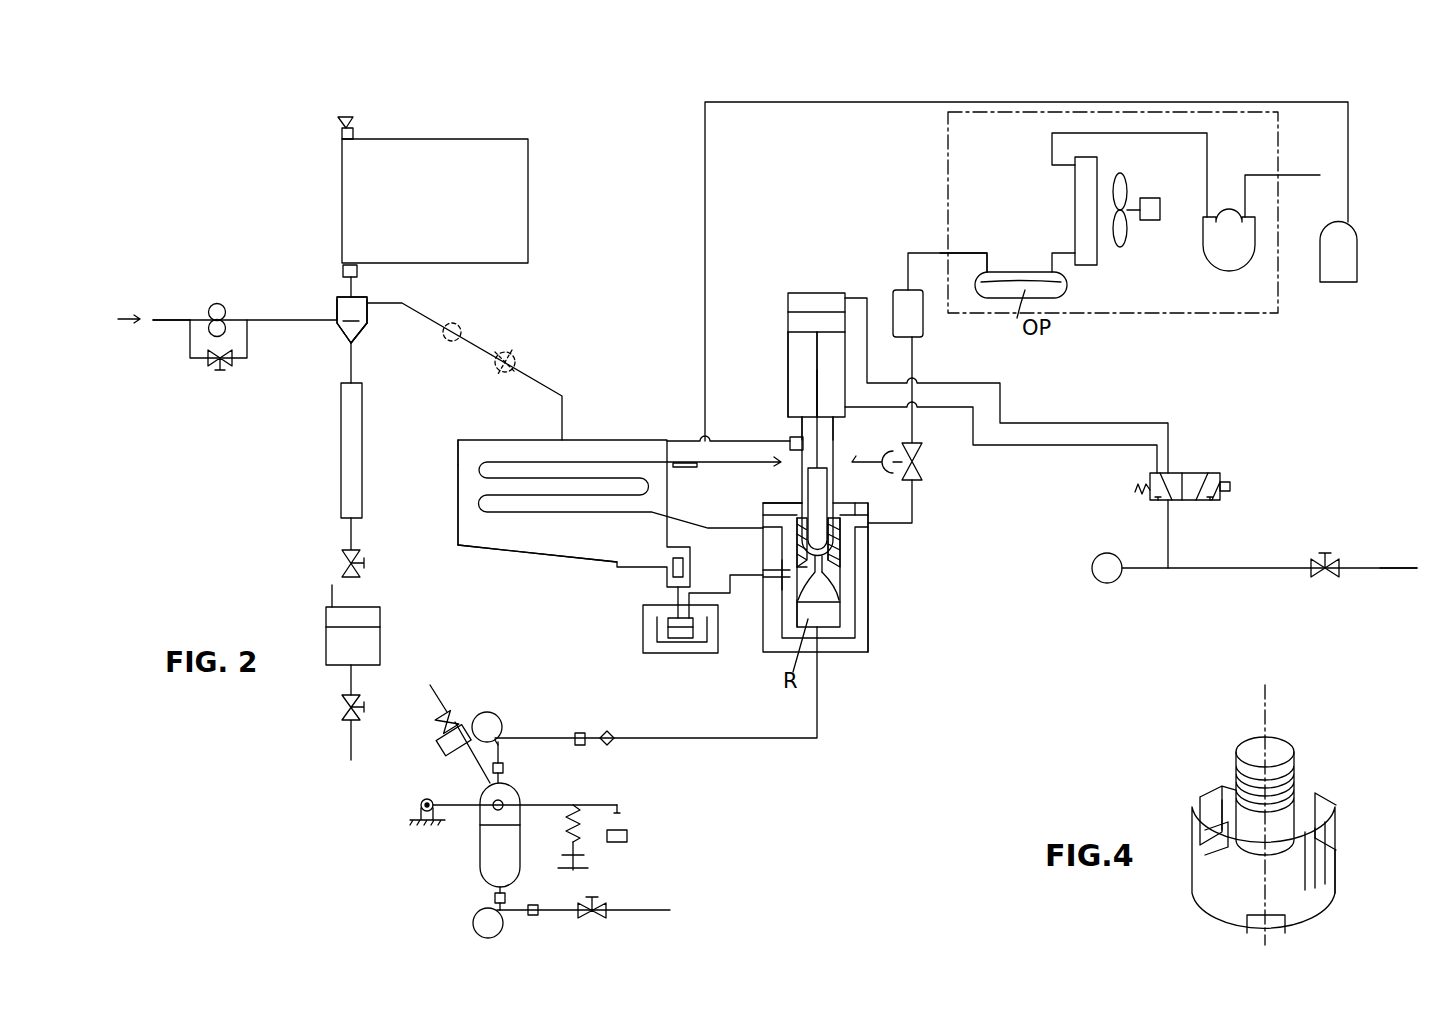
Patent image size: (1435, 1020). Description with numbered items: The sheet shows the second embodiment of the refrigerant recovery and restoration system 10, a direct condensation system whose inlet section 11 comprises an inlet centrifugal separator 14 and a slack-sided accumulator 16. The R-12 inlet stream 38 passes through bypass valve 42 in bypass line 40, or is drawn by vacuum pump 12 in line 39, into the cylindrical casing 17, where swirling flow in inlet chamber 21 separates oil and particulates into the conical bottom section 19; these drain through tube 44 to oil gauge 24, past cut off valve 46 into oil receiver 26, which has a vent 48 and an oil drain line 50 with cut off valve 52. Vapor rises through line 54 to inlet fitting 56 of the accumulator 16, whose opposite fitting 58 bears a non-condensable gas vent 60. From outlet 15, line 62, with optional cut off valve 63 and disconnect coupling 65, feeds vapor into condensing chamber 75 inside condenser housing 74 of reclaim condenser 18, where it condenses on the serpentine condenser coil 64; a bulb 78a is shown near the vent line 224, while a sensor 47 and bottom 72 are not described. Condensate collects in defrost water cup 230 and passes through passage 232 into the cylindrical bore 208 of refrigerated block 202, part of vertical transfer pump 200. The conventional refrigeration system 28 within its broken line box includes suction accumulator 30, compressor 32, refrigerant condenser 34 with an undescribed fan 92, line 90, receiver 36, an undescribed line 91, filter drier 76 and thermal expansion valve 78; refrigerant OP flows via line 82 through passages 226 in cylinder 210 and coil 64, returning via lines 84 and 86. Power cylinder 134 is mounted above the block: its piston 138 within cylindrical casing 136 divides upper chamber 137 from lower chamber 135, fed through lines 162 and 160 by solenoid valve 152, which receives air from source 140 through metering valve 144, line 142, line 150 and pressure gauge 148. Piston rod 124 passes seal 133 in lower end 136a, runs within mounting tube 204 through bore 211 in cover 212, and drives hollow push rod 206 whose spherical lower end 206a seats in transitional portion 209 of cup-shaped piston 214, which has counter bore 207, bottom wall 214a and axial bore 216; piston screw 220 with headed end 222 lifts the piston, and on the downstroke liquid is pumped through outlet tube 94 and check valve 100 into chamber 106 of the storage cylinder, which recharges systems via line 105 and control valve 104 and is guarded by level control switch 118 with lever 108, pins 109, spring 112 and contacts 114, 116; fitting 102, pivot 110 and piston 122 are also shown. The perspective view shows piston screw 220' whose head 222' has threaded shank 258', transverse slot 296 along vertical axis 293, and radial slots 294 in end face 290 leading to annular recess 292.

In FIG. 2, the refrigerant recovery and restoration system 10 is at (228, 280).
In FIG. 2, the inlet section 11 is at (387, 352).
In FIG. 2, the vacuum pump 12 is at (226, 311).
In FIG. 2, the inlet centrifugal separator 14 is at (376, 324).
In FIG. 2, the outlet 15 is at (367, 301).
In FIG. 2, the slack-sided accumulator 16 is at (452, 134).
In FIG. 2, the cylindrical casing 17 is at (337, 310).
In FIG. 2, the reclaim condenser 18 is at (599, 440).
In FIG. 2, the conical bottom section 19 is at (344, 338).
In FIG. 2, the inlet chamber 21 is at (353, 312).
In FIG. 2, the oil gauge 24 is at (341, 422).
In FIG. 2, the oil receiver 26 is at (326, 646).
In FIG. 2, the conventional refrigeration system 28 is at (1217, 316).
In FIG. 2, the suction accumulator 30 is at (1343, 282).
In FIG. 2, the compressor 32 is at (1225, 262).
In FIG. 2, the refrigerant condenser 34 is at (1075, 200).
In FIG. 2, the receiver 36 is at (1070, 285).
In FIG. 2, the refrigerant inlet stream 38 is at (120, 322).
In FIG. 2, the line 39 is at (166, 318).
In FIG. 2, the bypass line 40 is at (188, 356).
In FIG. 2, the bypass valve 42 is at (222, 368).
In FIG. 2, the line or tube 44 is at (351, 370).
In FIG. 2, the cut off valve 46 is at (359, 555).
In FIG. 2, the sensor 47 is at (424, 716).
In FIG. 2, the vent 48 is at (330, 593).
In FIG. 2, the oil drain line 50 is at (351, 688).
In FIG. 2, the cut off valve 52 is at (343, 708).
In FIG. 2, the line 54 is at (351, 286).
In FIG. 2, the inlet fitting 56 is at (343, 270).
In FIG. 2, the fitting 58 is at (357, 133).
In FIG. 2, the non-condensable gas vent 60 is at (353, 121).
In FIG. 2, the line 62 is at (426, 316).
In FIG. 2, the cut off valve 63 is at (514, 351).
In FIG. 2, the condenser coil 64 is at (527, 461).
In FIG. 2, the disconnect coupling 65 is at (459, 325).
In FIG. 2, the housing bottom 72 is at (535, 556).
In FIG. 2, the condenser housing 74 is at (457, 493).
In FIG. 2, the condensing chamber 75 is at (473, 452).
In FIG. 2, the filter drier 76 is at (897, 290).
In FIG. 2, the thermal expansion valve 78 is at (923, 462).
In FIG. 2, the temperature sensitive bulb 78a is at (684, 469).
In FIG. 2, the line 82 is at (913, 518).
In FIG. 2, the line 84 is at (704, 270).
In FIG. 2, the line 86 is at (1300, 174).
In FIG. 2, the line 90 is at (1058, 250).
In FIG. 2, the refrigerant line 91 is at (969, 253).
In FIG. 2, the fan 92 is at (1150, 197).
In FIG. 2, the outlet tube 94 is at (820, 722).
In FIG. 2, the check valve 100 is at (613, 733).
In FIG. 2, the fitting 102 is at (497, 889).
In FIG. 2, the control valve 104 is at (600, 918).
In FIG. 2, the line 105 is at (646, 910).
In FIG. 2, the chamber 106 is at (493, 856).
In FIG. 2, the lever 108 is at (546, 805).
In FIG. 2, the pins 109 is at (492, 805).
In FIG. 2, the pivot support 110 is at (425, 803).
In FIG. 2, the tension coil spring 112 is at (566, 825).
In FIG. 2, the moveable contact 114 is at (625, 813).
In FIG. 2, the contact 116 is at (630, 839).
In FIG. 2, the level control switch 118 is at (592, 854).
In FIG. 2, the piston 122 is at (504, 791).
In FIG. 2, the piston rod 124 is at (816, 341).
In FIG. 2, the seal 133 is at (802, 425).
In FIG. 2, the power cylinder 134 is at (798, 279).
In FIG. 2, the lower chamber 135 is at (797, 378).
In FIG. 2, the cylindrical casing 136 is at (788, 366).
In FIG. 2, the lower end 136a is at (836, 420).
In FIG. 2, the upper chamber 137 is at (825, 296).
In FIG. 2, the piston 138 is at (788, 320).
In FIG. 2, the source of air under pressure 140 is at (1384, 571).
In FIG. 2, the line 142 is at (1221, 569).
In FIG. 2, the metering valve 144 is at (1321, 580).
In FIG. 2, the pressure gauge 148 is at (1105, 585).
In FIG. 2, the line 150 is at (1170, 538).
In FIG. 2, the solenoid valve 152 is at (1209, 454).
In FIG. 2, the line 160 is at (1108, 448).
In FIG. 2, the line 162 is at (1150, 423).
In FIG. 2, the vertical transfer pump 200 is at (957, 564).
In FIG. 2, the refrigerated block 202 is at (868, 641).
In FIG. 2, the mounting tube 204 is at (835, 456).
In FIG. 2, the hollow push rod 206 is at (828, 491).
In FIG. 2, the spherical lower end 206a is at (842, 547).
In FIG. 2, the counter bore 207 is at (763, 510).
In FIG. 2, the cylindrical bore 208 is at (842, 583).
In FIG. 2, the transitional portion 209 is at (838, 556).
In FIG. 2, the upwardly open cylinder 210 is at (862, 653).
In FIG. 2, the cylindrical bore 211 is at (870, 513).
In FIG. 2, the cover 212 is at (776, 502).
In FIG. 2, the piston 214 is at (797, 542).
In FIG. 2, the bottom wall 214a is at (842, 568).
In FIG. 2, the axial bore 216 is at (790, 578).
In FIG. 2, the piston screw 220 is at (856, 588).
In FIG. 2, the headed end 222 is at (764, 641).
In FIG. 2, the vent line 224 is at (764, 443).
In FIG. 2, the passages or tubes 226 is at (856, 623).
In FIG. 2, the defrost water cup 230 is at (634, 655).
In FIG. 2, the passage 232 is at (760, 580).
In FIG. 4, the piston screw 220' is at (1311, 828).
In FIG. 4, the head 222' is at (1379, 857).
In FIG. 4, the threaded shank 258' is at (1300, 785).
In FIG. 4, the end face 290 is at (1336, 808).
In FIG. 4, the annular recess 292 is at (1222, 806).
In FIG. 4, the vertical axis 293 is at (1268, 704).
In FIG. 4, the radial slots 294 is at (1222, 782).
In FIG. 4, the transverse slot 296 is at (1256, 925).